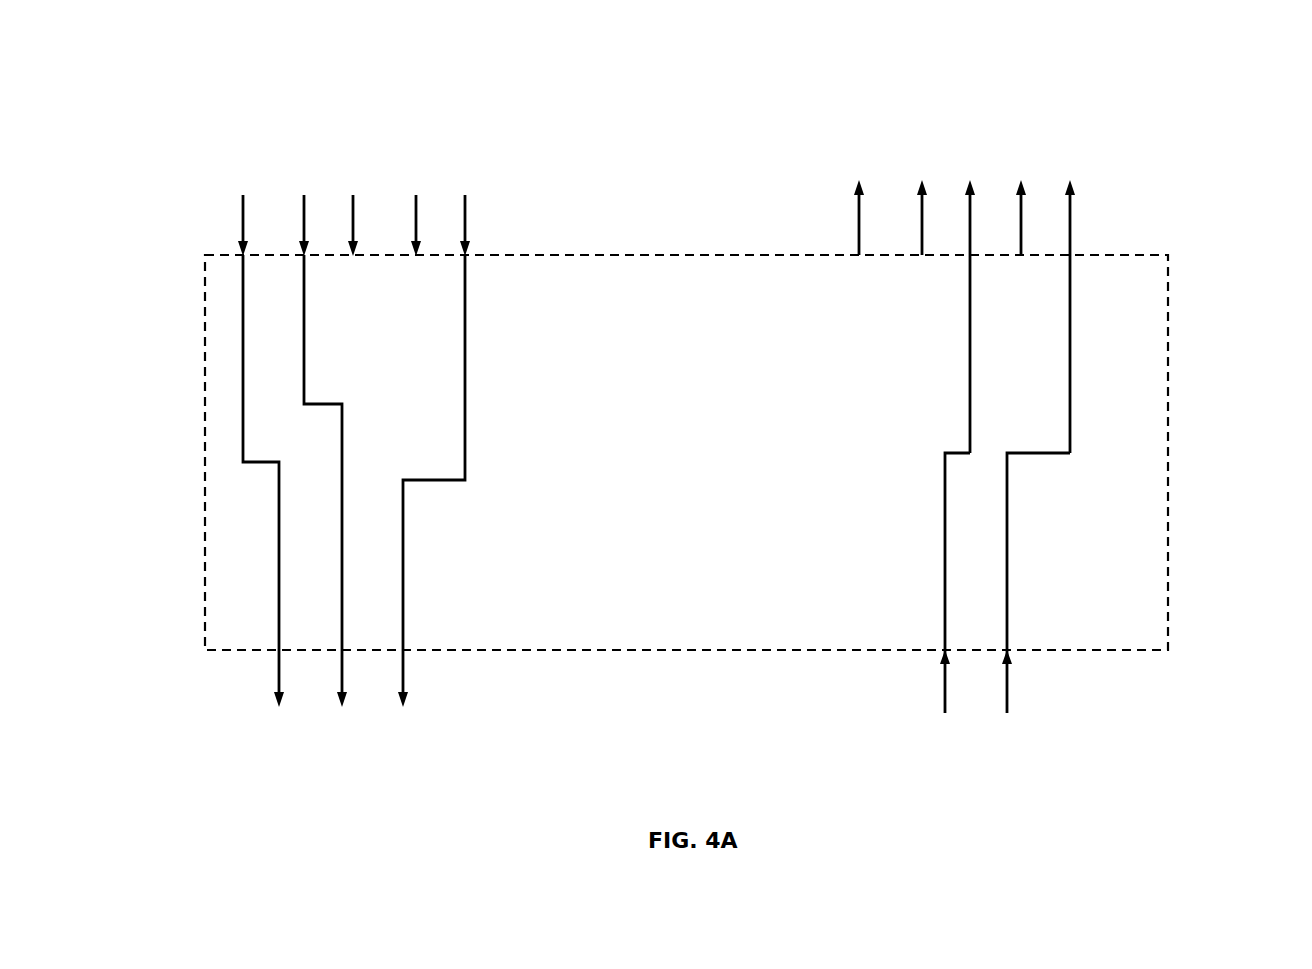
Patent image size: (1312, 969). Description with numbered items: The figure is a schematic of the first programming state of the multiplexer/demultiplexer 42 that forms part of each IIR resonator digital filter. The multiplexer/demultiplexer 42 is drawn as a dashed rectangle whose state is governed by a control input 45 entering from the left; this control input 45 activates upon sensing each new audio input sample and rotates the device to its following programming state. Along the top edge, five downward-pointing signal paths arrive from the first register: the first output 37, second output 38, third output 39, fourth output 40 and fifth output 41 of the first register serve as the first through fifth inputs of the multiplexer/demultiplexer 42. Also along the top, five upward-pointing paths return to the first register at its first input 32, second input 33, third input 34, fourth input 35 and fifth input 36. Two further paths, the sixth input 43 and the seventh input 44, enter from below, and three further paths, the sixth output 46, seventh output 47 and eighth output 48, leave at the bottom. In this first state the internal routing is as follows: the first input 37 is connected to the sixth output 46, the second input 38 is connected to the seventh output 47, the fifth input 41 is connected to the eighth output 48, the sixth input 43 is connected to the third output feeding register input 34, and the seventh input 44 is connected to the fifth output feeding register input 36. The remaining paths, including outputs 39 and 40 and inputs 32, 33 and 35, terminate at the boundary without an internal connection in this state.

The first input of the first register 32 is at (859, 217).
The second input of the first register 33 is at (922, 195).
The third input of the first register 34 is at (970, 195).
The fourth input of the first register 35 is at (1021, 195).
The fifth input of the first register 36 is at (1070, 217).
The first output of the first register 37 is at (243, 215).
The second output of the first register 38 is at (304, 213).
The third output of the first register 39 is at (353, 213).
The fourth output of the first register 40 is at (416, 213).
The fifth output of the first register 41 is at (465, 215).
The multiplexer/demultiplexer 42 is at (1224, 137).
The sixth input 43 is at (945, 688).
The seventh input 44 is at (1007, 688).
The control input 45 is at (196, 311).
The sixth output 46 is at (279, 688).
The seventh output 47 is at (342, 668).
The eighth output 48 is at (403, 688).